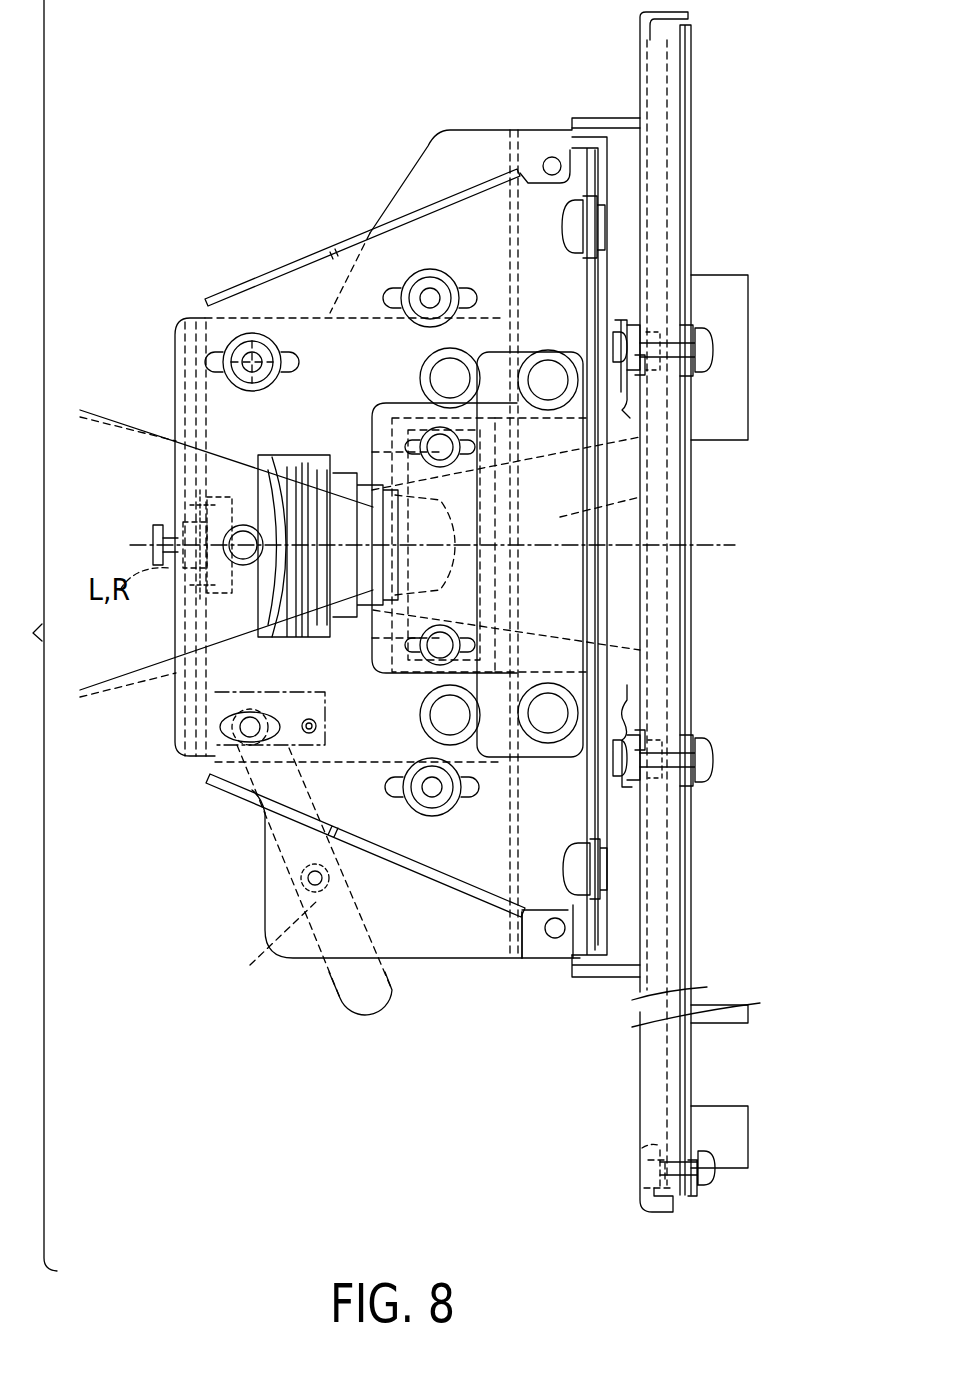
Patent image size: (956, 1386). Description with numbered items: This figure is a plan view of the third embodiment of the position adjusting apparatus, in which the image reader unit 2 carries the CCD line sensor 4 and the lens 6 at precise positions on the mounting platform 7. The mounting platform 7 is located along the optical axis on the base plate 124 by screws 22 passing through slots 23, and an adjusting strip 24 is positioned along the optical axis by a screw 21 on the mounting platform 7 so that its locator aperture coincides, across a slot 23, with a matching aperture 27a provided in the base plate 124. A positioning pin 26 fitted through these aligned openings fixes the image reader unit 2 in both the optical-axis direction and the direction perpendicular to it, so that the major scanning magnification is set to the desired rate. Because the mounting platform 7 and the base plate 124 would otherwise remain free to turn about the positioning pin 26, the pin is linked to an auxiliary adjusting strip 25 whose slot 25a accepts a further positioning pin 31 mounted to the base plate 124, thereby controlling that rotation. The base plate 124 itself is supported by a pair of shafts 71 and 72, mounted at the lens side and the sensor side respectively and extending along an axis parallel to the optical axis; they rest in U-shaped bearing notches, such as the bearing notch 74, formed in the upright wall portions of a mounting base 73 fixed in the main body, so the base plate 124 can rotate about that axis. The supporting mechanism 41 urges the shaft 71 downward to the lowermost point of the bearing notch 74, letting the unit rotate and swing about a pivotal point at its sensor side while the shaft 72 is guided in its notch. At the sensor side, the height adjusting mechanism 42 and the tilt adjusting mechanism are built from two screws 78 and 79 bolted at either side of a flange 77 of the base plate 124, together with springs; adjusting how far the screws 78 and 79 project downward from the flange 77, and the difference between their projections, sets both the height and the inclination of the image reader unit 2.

The image reader unit 2 is at (358, 628).
The CCD line sensor 4 is at (688, 558).
The lens 6 is at (265, 475).
The mounting platform 7 is at (433, 848).
The screw 21 is at (308, 740).
The screws 22 is at (252, 340).
The slots 23 is at (390, 298).
The adjusting strip 24 is at (176, 706).
The auxiliary adjusting strip 25 is at (328, 982).
The slot 25a is at (273, 947).
The positioning pin 26 is at (260, 735).
The matching aperture 27a is at (316, 722).
The positioning pin 31 is at (308, 880).
The supporting mechanism 41 is at (168, 566).
The shaft 71 is at (155, 530).
The shaft 72 is at (640, 500).
The mounting base 73 is at (487, 795).
The bearing notch 74 is at (168, 525).
The flange 77 is at (532, 140).
The screw 78 is at (556, 940).
The screw 79 is at (553, 153).
The base plate 124 is at (456, 948).
The height adjusting mechanism 42 is at (538, 933).